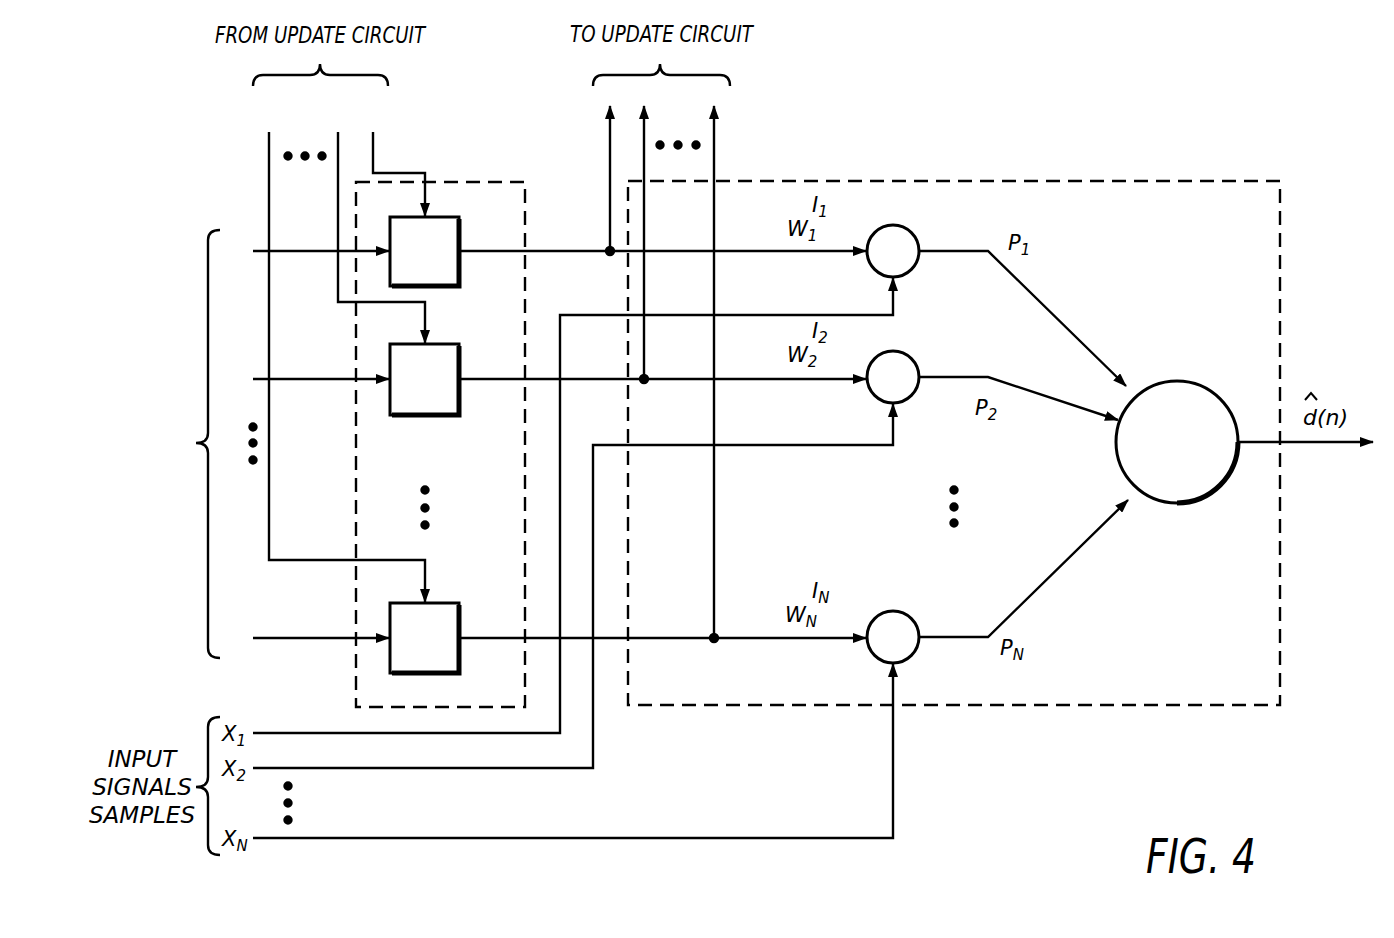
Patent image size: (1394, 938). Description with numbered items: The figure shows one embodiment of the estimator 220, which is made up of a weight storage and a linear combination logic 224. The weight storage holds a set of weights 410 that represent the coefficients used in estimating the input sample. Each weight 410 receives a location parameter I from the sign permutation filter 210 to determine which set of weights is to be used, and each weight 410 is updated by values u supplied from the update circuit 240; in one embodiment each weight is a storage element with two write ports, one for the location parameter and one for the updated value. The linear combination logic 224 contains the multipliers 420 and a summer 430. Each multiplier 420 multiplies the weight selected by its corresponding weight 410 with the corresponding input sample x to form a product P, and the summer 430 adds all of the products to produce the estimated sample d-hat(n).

The sign permutation filter 210 is at (106, 515).
The estimator 220 is at (467, 178).
The linear combination logic 224 is at (1000, 140).
The update circuit 240 is at (253, 78).
The weights 410 is at (442, 218).
The multipliers 420 is at (908, 230).
The summer 430 is at (1192, 383).